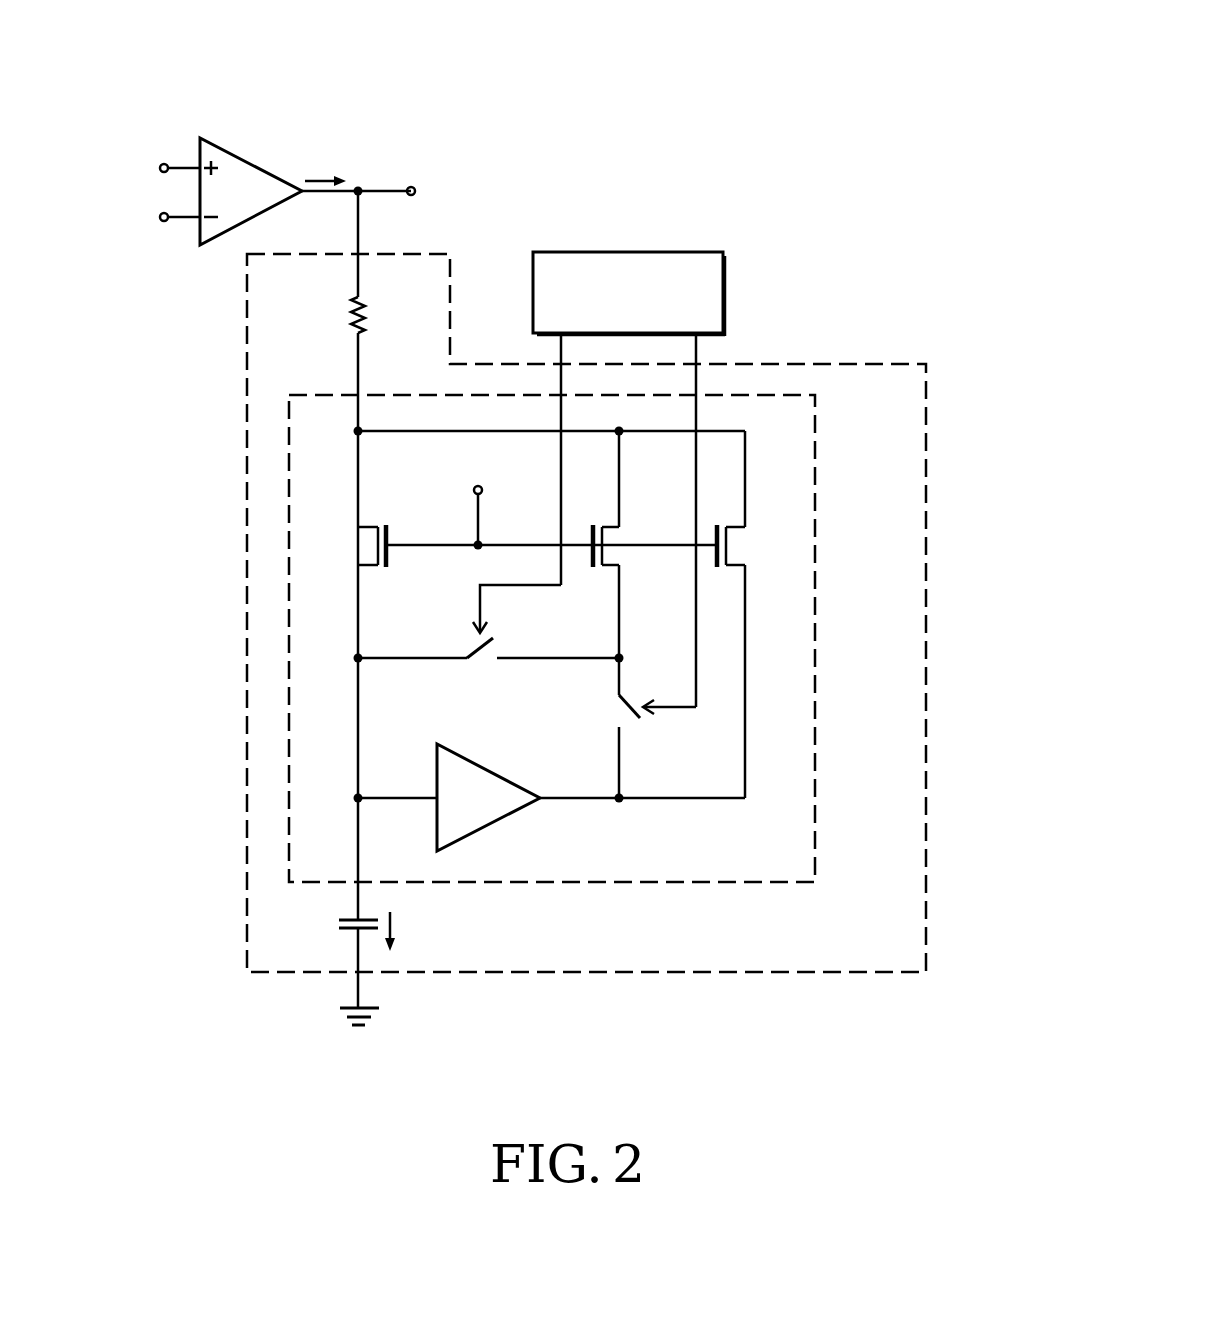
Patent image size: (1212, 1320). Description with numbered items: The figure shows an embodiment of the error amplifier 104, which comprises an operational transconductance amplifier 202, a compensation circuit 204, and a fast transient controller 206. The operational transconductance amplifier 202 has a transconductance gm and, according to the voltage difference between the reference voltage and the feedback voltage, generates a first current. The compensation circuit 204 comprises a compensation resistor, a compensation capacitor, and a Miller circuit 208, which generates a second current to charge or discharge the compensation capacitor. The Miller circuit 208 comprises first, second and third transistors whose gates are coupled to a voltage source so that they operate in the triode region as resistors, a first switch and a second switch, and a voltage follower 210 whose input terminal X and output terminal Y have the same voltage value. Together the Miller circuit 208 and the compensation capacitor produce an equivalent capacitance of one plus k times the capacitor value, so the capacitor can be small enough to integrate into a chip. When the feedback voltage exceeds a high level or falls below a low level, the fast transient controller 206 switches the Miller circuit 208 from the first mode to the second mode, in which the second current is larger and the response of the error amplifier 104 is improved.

The error amplifier 104 is at (909, 61).
The operational transconductance amplifier 202 is at (227, 147).
The compensation circuit 204 is at (928, 436).
The fast transient controller 206 is at (630, 250).
The Miller circuit 208 is at (817, 641).
The voltage follower 210 is at (488, 767).